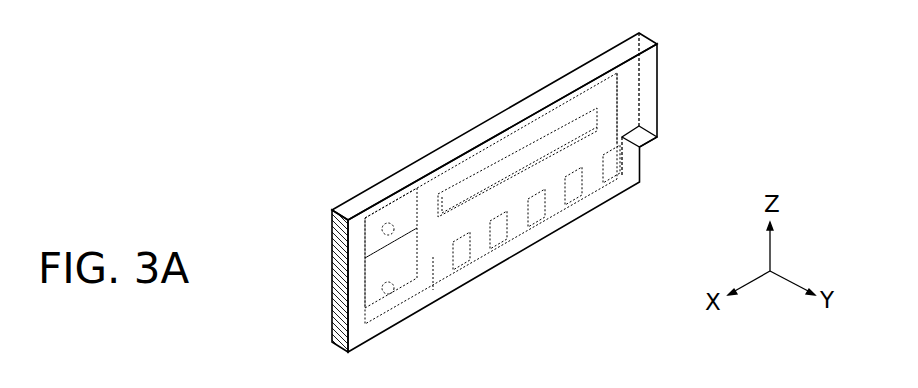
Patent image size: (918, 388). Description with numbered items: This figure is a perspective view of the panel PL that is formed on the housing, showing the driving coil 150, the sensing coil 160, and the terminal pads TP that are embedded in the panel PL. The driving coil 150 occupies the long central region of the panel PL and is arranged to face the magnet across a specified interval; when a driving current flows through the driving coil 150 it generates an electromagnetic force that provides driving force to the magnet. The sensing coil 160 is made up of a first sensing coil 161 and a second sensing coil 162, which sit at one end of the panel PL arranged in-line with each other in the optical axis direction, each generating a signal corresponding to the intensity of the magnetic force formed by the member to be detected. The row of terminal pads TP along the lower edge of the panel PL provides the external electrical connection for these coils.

The panel PL is at (657, 37).
The driving coil 150 is at (477, 132).
The terminal pads TP is at (618, 185).
The sensing coil 160 is at (314, 252).
The first sensing coil 161 is at (360, 240).
The second sensing coil 162 is at (360, 297).